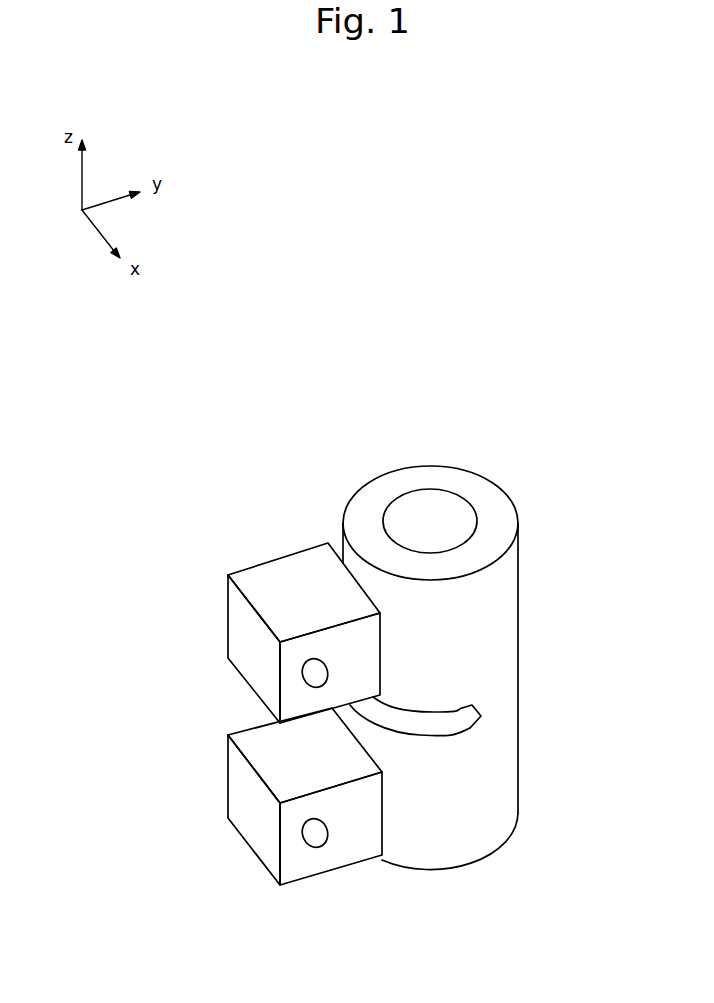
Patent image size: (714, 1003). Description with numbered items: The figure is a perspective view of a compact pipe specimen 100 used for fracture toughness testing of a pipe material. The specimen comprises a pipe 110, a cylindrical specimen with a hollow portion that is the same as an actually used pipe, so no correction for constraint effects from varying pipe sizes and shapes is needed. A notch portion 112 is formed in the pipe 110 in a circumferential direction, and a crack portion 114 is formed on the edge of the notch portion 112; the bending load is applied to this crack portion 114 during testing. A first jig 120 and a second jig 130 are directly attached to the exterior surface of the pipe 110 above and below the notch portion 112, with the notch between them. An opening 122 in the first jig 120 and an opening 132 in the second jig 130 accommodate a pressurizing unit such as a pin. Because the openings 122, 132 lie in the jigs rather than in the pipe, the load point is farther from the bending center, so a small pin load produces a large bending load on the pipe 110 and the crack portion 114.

The compact pipe specimen 100 is at (484, 448).
The pipe 110 is at (498, 608).
The notch portion 112 is at (456, 729).
The crack portion 114 is at (486, 710).
The first jig 120 is at (241, 632).
The opening 122 is at (317, 664).
The second jig 130 is at (255, 827).
The opening 132 is at (322, 848).